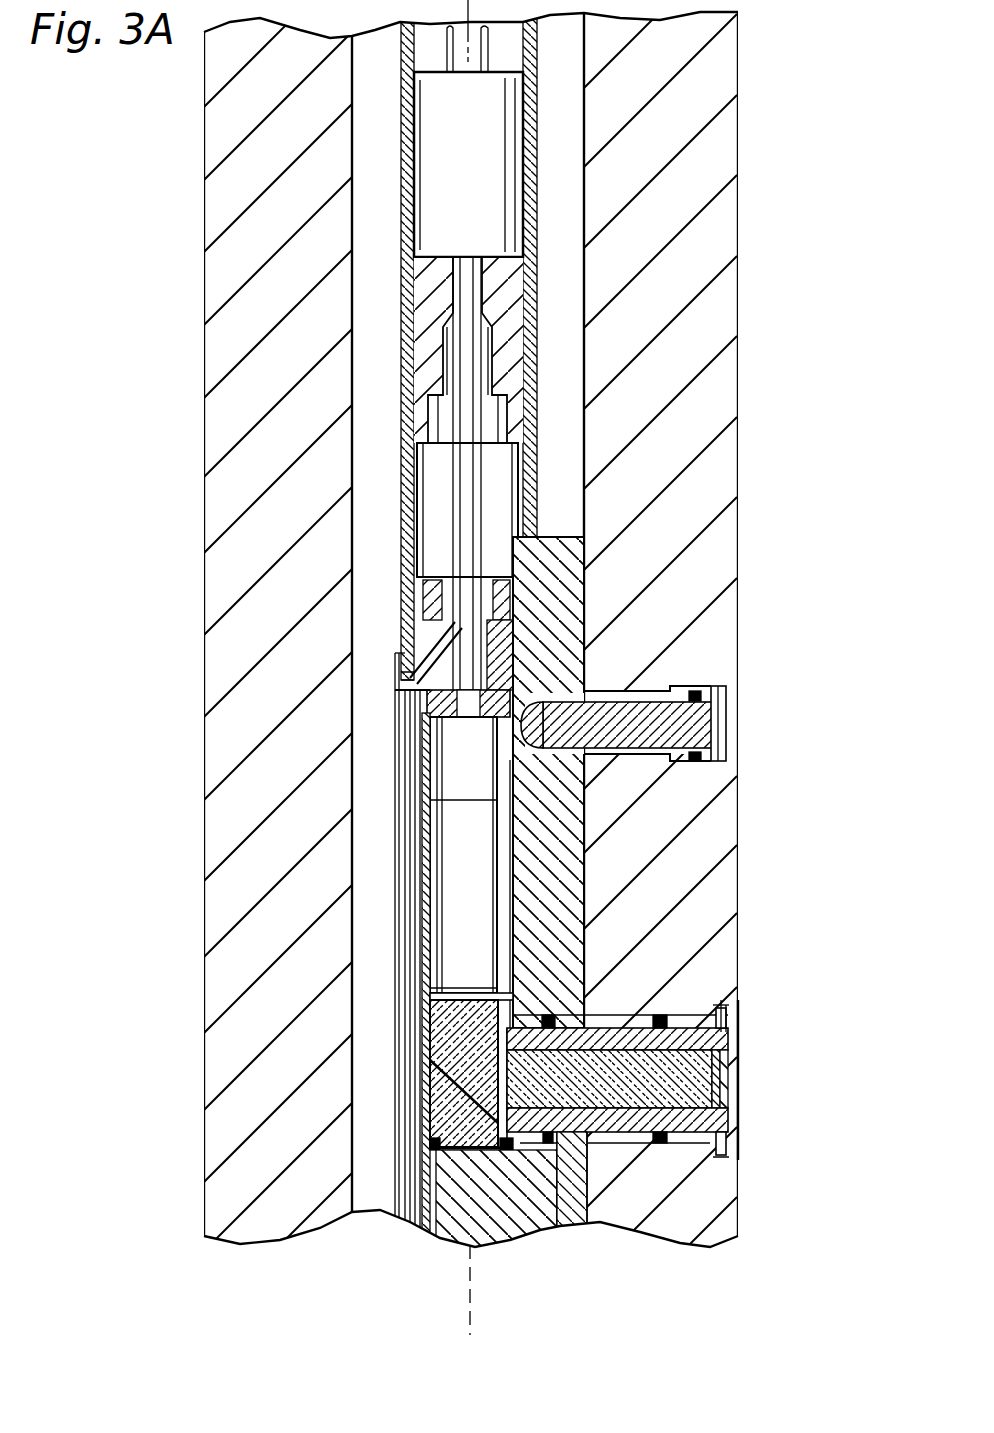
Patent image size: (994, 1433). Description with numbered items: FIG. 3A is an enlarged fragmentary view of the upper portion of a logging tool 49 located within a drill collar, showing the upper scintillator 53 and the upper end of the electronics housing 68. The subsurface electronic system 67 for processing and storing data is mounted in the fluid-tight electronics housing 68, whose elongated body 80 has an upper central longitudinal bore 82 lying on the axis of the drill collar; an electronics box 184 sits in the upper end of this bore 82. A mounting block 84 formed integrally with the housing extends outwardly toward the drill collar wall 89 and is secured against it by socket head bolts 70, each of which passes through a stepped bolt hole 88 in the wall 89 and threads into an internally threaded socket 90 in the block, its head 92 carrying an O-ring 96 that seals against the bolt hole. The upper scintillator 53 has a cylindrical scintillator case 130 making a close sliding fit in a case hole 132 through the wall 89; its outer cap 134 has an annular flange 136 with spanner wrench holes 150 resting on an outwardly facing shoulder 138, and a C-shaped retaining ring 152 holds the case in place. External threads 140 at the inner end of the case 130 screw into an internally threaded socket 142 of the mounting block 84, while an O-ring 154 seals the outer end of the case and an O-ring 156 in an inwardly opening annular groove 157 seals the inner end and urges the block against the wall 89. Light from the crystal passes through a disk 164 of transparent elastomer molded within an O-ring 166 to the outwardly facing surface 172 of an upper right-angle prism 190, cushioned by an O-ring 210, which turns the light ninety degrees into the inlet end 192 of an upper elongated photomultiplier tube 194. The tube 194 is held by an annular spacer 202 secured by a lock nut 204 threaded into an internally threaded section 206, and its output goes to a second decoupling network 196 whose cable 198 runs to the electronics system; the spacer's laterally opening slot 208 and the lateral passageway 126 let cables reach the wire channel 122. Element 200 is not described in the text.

The electronics box 184 is at (425, 120).
The electronics housing 68 is at (392, 161).
The logging tool 49 is at (392, 243).
The subsurface electronic system 67 is at (505, 216).
The drill collar wall 89 is at (720, 318).
The mounting block 84 is at (585, 522).
The upper central longitudinal bore 82 is at (517, 484).
The cable 198 is at (478, 525).
The elongated body 80 is at (392, 530).
The lock nut 204 is at (527, 587).
The internally threaded section 206 is at (520, 618).
The annular spacer 202 is at (503, 637).
The lateral passageway 126 is at (403, 648).
The laterally opening slot 208 is at (430, 684).
The second decoupling network 196 is at (458, 750).
The O-ring 166 is at (497, 990).
The upper elongated photomultiplier tube 194 is at (513, 870).
The socket head bolt 70 is at (640, 700).
The stepped bolt hole 88 is at (617, 756).
The internally threaded socket 90 is at (558, 738).
The head 92 is at (697, 755).
The O-ring 96 is at (725, 690).
The external threads 140 is at (597, 907).
The O-ring 156 is at (567, 1000).
The spanner wrench holes 150 is at (712, 1015).
The case hole 132 is at (640, 1005).
The annular flange 136 is at (714, 1020).
The C-shaped retaining ring 152 is at (726, 1010).
The cap 134 is at (728, 1045).
The upper scintillator 53 is at (754, 1077).
The seal 200 is at (430, 1000).
The inlet end 192 is at (430, 1020).
The upper right-angle prism 190 is at (450, 1095).
The disk 164 is at (523, 1067).
The outwardly facing surface 172 is at (507, 1087).
The outwardly facing shoulder 138 is at (712, 1142).
The wire channel 122 is at (413, 1165).
The O-ring 210 is at (437, 1223).
The inwardly opening annular groove 157 is at (545, 1140).
The cylindrical scintillator case 130 is at (615, 1147).
The O-ring 154 is at (660, 1143).
The internally threaded socket 142 is at (493, 1250).